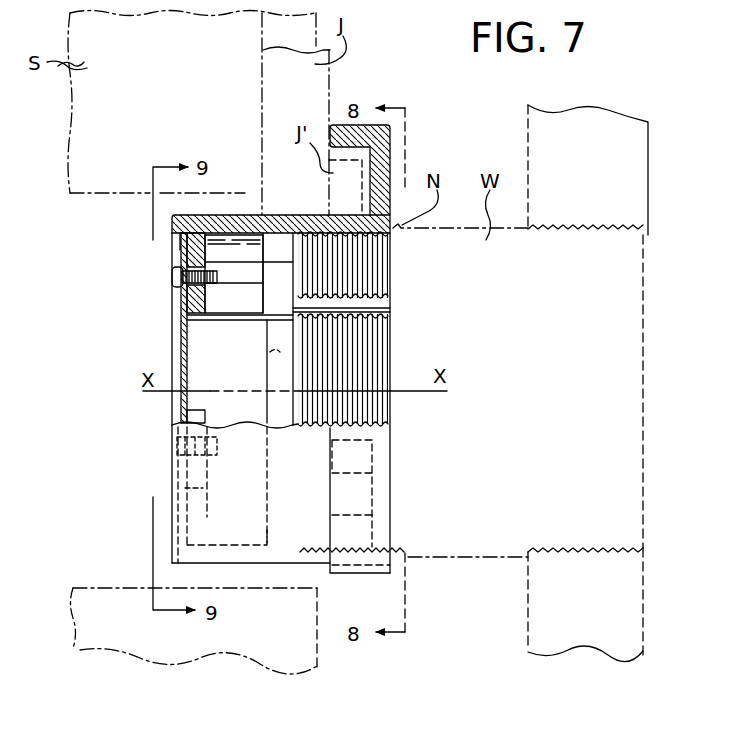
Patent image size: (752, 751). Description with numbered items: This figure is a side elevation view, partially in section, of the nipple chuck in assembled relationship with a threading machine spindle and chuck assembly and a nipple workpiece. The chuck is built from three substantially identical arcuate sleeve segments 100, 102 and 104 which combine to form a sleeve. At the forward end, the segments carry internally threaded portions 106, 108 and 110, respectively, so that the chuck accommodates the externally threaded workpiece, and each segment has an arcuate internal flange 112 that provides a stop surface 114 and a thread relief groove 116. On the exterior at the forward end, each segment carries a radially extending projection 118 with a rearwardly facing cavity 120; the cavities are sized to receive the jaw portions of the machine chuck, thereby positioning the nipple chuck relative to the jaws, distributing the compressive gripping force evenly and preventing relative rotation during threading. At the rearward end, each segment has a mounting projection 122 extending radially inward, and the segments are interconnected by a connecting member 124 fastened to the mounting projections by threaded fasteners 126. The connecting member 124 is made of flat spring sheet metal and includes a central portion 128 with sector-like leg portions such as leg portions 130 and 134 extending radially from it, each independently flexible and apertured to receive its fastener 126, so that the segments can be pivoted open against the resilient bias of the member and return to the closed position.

The arcuate sleeve segment 100 is at (237, 215).
The arcuate sleeve segment 102 is at (171, 346).
The arcuate sleeve segment 104 is at (172, 563).
The internally threaded portion 106 is at (368, 230).
The internally threaded portion 108 is at (377, 329).
The internally threaded portion 110 is at (375, 543).
The arcuate internal flange 112 is at (275, 306).
The stop surface 114 is at (299, 271).
The thread relief groove 116 is at (294, 288).
The radially extending projection 118 is at (337, 125).
The rearwardly facing cavity 120 is at (353, 198).
The mounting projection 122 is at (174, 245).
The connecting member 124 is at (167, 368).
The threaded fastener 126 is at (172, 277).
The central portion 128 is at (187, 413).
The sector like leg portion 130 is at (186, 301).
The sector like leg portion 134 is at (180, 518).